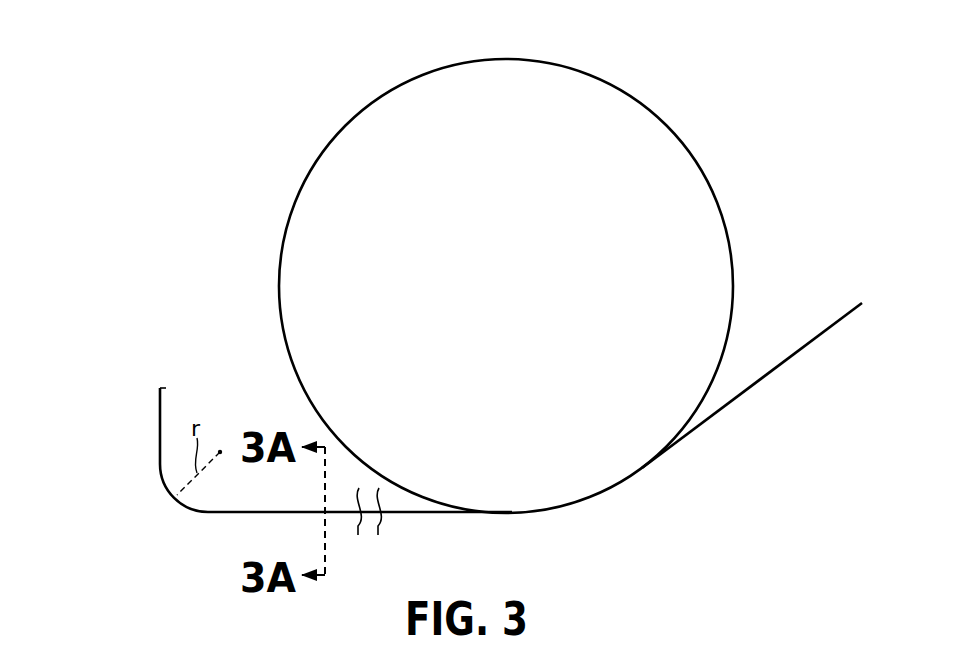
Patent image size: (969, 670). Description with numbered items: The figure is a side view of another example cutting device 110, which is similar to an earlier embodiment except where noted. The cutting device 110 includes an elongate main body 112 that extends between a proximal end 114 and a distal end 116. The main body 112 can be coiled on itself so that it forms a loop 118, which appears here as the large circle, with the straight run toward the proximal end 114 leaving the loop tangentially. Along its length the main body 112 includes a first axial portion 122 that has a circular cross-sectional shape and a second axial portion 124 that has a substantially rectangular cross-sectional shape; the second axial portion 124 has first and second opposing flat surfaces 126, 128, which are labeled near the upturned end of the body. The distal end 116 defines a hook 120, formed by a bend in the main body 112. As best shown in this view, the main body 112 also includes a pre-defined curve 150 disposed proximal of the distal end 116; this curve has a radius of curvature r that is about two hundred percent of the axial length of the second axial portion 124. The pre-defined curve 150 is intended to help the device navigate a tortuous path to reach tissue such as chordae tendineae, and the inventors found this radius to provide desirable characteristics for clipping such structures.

The cutting device 110 is at (288, 88).
The loop 118 is at (651, 93).
The proximal end 114 is at (828, 323).
The main body 112 is at (718, 410).
The first axial portion 122 is at (403, 513).
The distal end 116 is at (160, 463).
The pre-defined curve 150 is at (178, 512).
The second flat surface 128 is at (160, 388).
The first flat surface 126 is at (163, 395).
The hook 120 is at (132, 383).
The second axial portion 124 is at (148, 428).